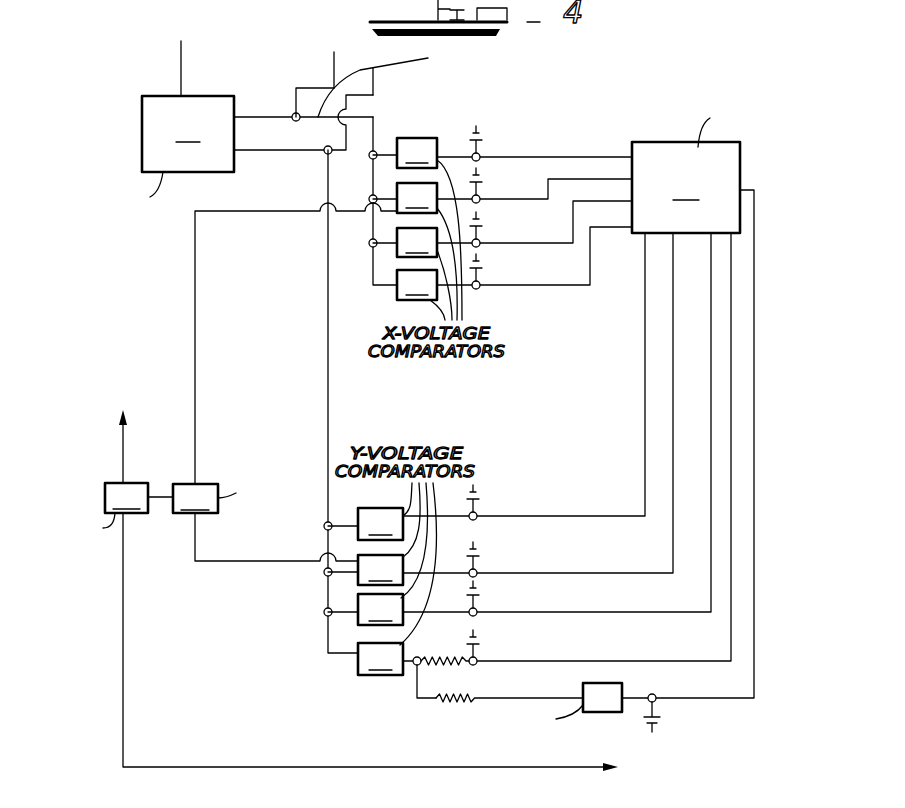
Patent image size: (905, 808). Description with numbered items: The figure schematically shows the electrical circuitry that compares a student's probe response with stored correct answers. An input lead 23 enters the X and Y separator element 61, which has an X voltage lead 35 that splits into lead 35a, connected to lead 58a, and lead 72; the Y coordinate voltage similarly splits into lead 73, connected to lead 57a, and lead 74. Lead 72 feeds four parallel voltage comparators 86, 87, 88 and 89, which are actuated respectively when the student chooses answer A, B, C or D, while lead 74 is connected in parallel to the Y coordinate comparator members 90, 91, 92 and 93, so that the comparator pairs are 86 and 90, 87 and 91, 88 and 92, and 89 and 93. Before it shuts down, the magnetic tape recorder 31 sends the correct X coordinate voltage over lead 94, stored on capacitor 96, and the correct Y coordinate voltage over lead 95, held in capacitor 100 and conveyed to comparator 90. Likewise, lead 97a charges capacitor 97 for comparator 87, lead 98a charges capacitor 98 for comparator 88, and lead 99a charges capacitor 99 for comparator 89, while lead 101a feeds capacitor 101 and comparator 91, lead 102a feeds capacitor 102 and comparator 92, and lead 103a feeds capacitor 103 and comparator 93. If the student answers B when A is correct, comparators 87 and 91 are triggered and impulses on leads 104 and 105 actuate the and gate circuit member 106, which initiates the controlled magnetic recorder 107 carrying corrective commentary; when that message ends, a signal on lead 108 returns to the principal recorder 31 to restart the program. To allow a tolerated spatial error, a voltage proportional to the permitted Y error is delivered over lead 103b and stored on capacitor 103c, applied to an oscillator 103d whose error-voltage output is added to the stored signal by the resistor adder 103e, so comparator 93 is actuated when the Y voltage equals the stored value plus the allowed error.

The input lead 23 is at (183, 72).
The magnetic tape recorder 31 is at (752, 171).
The X voltage lead 35 is at (252, 116).
The lead 35a is at (307, 88).
The lead 57a is at (396, 81).
The lead 58a is at (335, 73).
The X and Y separator element 61 is at (134, 157).
The lead 72 is at (373, 78).
The lead 73 is at (360, 97).
The lead 74 is at (328, 308).
The voltage comparator 86 is at (417, 153).
The voltage comparator 87 is at (417, 198).
The voltage comparator 88 is at (417, 242).
The voltage comparator 89 is at (417, 285).
The Y coordinate comparator member 90 is at (380, 524).
The Y coordinate comparator member 91 is at (380, 570).
The Y coordinate comparator member 92 is at (380, 609).
The Y coordinate comparator member 93 is at (380, 659).
The lead 94 is at (583, 156).
The lead 95 is at (645, 410).
The capacitor 96 is at (492, 138).
The capacitor 97 is at (488, 186).
The lead 97a is at (579, 178).
The capacitor 98 is at (483, 229).
The lead 98a is at (573, 220).
The capacitor 99 is at (483, 271).
The lead 99a is at (571, 285).
The capacitor 100 is at (482, 503).
The capacitor 101 is at (483, 557).
The lead 101a is at (672, 545).
The capacitor 102 is at (483, 605).
The lead 102a is at (710, 578).
The capacitor 103 is at (483, 642).
The lead 103a is at (730, 628).
The lead 103b is at (754, 677).
The capacitor 103c is at (660, 717).
The oscillator 103d is at (602, 693).
The resistor adder 103e is at (421, 664).
The lead 104 is at (195, 392).
The lead 105 is at (232, 562).
The and gate circuit member 106 is at (218, 488).
The magnetic recorder 107 is at (84, 517).
The lead 108 is at (123, 717).